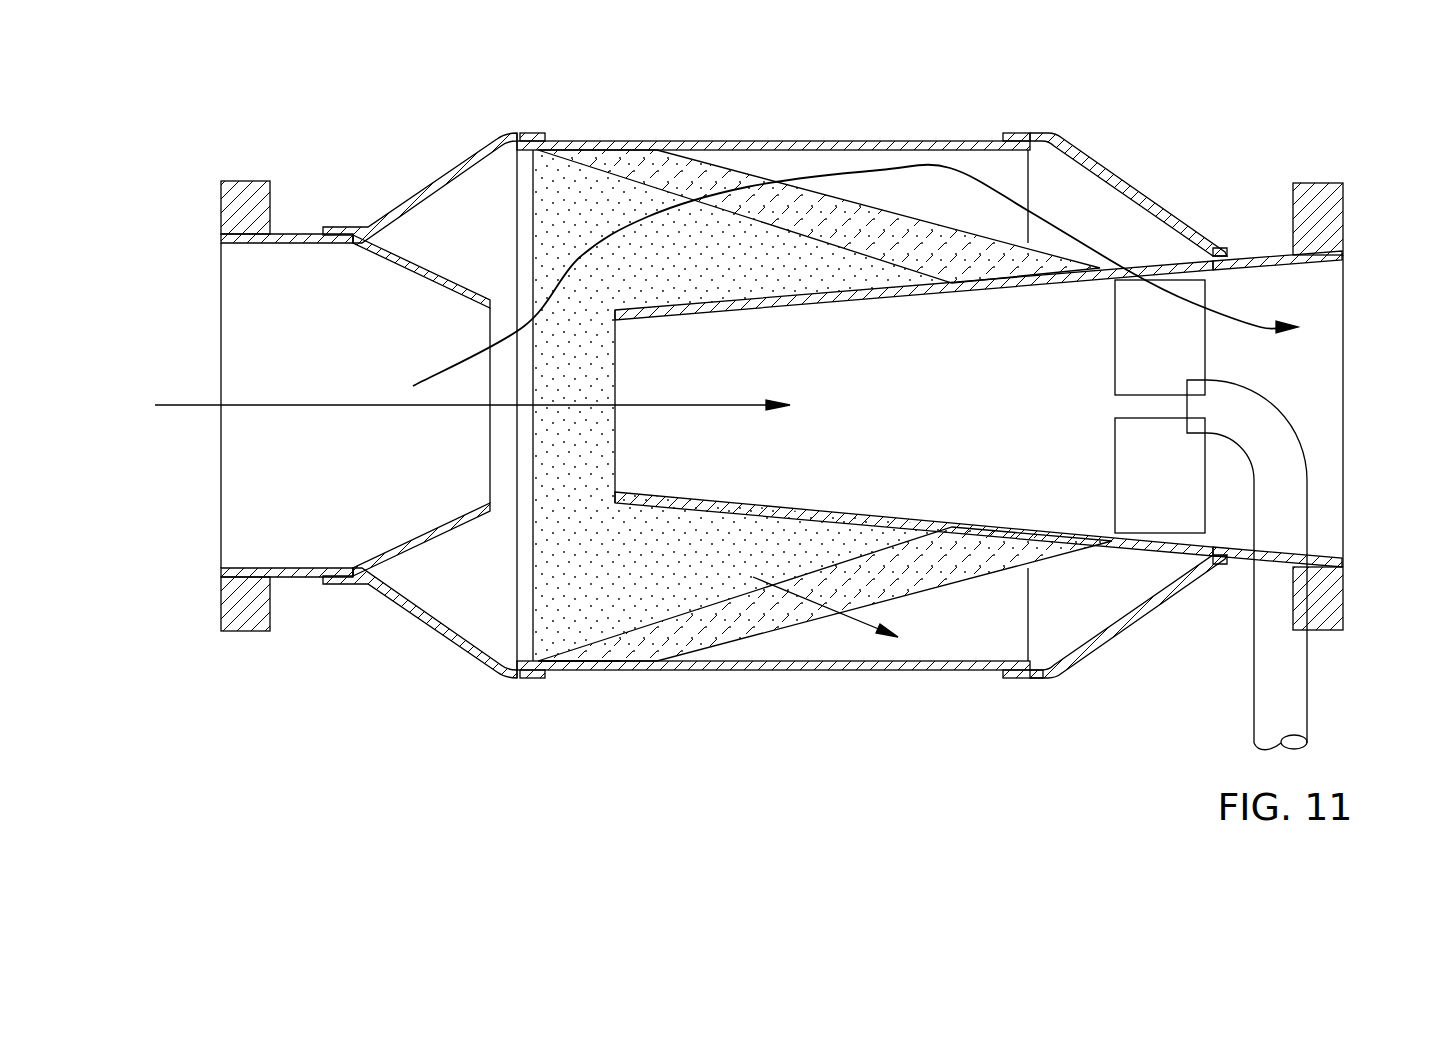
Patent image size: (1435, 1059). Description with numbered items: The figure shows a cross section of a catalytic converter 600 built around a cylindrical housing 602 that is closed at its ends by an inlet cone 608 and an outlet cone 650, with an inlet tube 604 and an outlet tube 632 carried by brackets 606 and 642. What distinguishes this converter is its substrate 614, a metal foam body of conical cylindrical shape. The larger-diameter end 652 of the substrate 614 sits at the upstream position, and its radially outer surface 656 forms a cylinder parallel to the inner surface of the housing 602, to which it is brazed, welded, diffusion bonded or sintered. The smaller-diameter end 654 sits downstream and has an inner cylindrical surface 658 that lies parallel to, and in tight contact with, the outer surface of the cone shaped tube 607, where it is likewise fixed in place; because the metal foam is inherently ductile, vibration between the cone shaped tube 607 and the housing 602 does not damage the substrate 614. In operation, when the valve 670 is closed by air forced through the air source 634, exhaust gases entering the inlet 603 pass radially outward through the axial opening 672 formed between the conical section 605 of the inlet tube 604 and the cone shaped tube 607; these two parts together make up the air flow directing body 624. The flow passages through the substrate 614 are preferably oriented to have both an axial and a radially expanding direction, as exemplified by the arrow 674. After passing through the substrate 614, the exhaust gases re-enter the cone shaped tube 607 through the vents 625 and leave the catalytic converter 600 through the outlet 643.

The catalytic converter 600 is at (775, 387).
The housing 602 is at (890, 140).
The inlet 603 is at (220, 318).
The inlet tube 604 is at (285, 234).
The conical section 605 is at (455, 288).
The bracket 606 is at (235, 180).
The cone shaped tube 607 is at (717, 502).
The inlet cone 608 is at (422, 192).
The substrate 614 is at (663, 641).
The air flow directing body 624 is at (872, 513).
The vents 625 is at (1178, 533).
The outlet tube 632 is at (1263, 262).
The air source 634 is at (1258, 448).
The bracket 642 is at (1345, 195).
The outlet 643 is at (1325, 513).
The outlet cone 650 is at (1075, 177).
The end of substrate (larger diameter) 652 is at (580, 655).
The end of substrate (smaller diameter) 654 is at (952, 570).
The radially outer surface 656 is at (578, 668).
The inner cylindrical surface 658 is at (1037, 540).
The valve 670 is at (947, 330).
The axial opening 672 is at (455, 490).
The arrow 674 is at (830, 600).